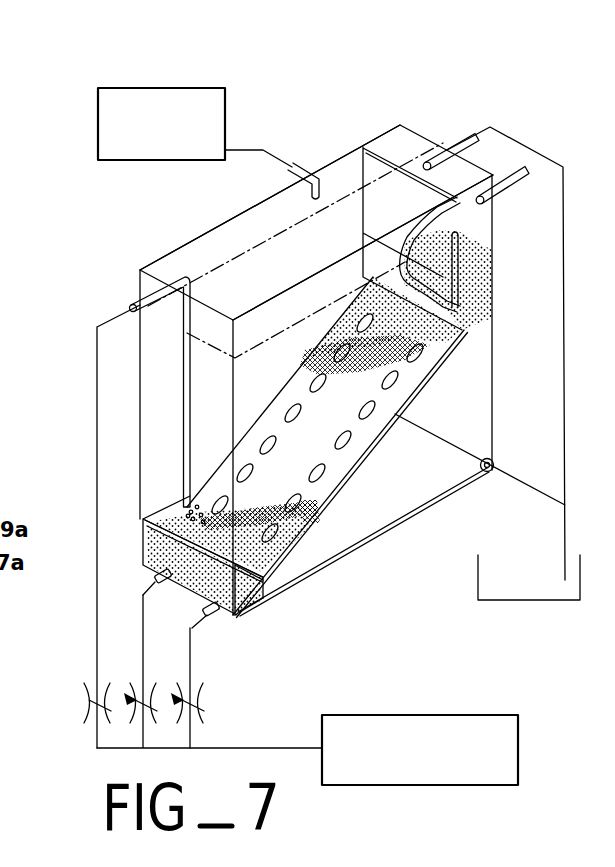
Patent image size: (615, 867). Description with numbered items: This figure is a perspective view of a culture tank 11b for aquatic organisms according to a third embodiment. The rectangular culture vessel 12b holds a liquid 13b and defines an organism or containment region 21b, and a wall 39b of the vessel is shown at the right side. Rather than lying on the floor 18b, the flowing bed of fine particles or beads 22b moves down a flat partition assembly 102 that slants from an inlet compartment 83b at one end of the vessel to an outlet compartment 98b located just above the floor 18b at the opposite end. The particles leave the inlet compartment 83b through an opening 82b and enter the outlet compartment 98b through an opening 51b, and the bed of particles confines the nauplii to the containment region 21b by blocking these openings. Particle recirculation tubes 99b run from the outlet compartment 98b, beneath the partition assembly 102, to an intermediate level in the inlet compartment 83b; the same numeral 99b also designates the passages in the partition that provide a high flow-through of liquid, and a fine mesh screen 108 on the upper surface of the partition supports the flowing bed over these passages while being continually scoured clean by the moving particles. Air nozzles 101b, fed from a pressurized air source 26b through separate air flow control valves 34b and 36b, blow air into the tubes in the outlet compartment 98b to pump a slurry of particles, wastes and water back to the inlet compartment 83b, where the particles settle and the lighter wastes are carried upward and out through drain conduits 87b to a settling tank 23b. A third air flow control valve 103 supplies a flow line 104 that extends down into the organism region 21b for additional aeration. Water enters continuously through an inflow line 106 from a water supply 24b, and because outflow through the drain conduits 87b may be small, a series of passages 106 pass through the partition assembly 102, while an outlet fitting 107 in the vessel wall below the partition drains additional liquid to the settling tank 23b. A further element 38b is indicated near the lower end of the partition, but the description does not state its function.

The abrasive treatment apparatus 11b is at (530, 112).
The culture vessel 12b is at (133, 294).
The liquid 13b is at (203, 270).
The organism region 21b is at (241, 262).
The flowing bed of particles 22b is at (363, 276).
The rear wall 39b is at (496, 366).
The settling tank 23b is at (547, 600).
The inlet compartment 83b is at (387, 142).
The drain conduits 87b is at (460, 137).
The opening 82b is at (457, 345).
The water supply 24b is at (97, 117).
The inflow line 106 is at (298, 165).
The flow line 104 is at (183, 360).
The particle recirculation tubes 99b is at (369, 418).
The fine mesh screen 108 is at (312, 373).
The partition assembly 102 is at (428, 393).
The floor 18b is at (368, 540).
The outlet fitting 107 is at (497, 462).
The outlet compartment 98b is at (152, 540).
The opening 51b is at (177, 530).
The drain 38b is at (276, 605).
The air nozzles 101b is at (219, 613).
The air flow control valve 34b is at (200, 699).
The air flow control valve 36b is at (152, 715).
The third air flow control valve 103 is at (86, 709).
The pressurized air source 26b is at (423, 715).